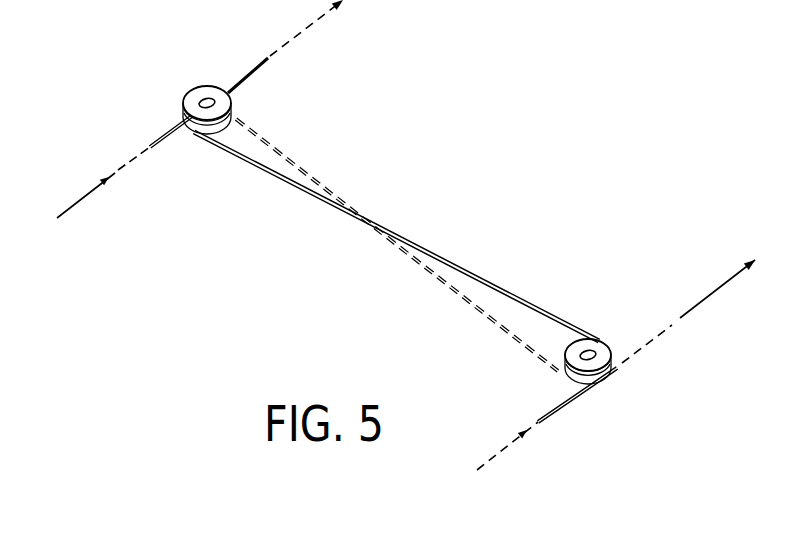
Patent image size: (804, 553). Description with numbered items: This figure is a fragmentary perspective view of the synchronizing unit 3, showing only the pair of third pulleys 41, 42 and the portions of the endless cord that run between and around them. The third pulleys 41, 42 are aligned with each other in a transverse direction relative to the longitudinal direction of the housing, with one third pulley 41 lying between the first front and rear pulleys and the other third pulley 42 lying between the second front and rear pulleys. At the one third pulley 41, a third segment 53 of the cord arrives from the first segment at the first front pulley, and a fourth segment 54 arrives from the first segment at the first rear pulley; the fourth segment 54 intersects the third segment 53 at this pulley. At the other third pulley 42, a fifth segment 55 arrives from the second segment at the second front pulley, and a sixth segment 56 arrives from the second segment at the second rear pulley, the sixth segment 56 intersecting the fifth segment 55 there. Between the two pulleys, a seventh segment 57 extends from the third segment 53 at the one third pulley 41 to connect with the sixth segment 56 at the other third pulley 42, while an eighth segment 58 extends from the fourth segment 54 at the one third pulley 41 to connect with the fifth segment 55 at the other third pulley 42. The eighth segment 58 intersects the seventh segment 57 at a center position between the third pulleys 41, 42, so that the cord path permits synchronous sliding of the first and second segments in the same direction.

The synchronizing unit 3 is at (425, 200).
The third pulley 41 is at (196, 88).
The third pulley 42 is at (599, 347).
The third segment 53 is at (143, 147).
The fourth segment 54 is at (240, 73).
The fifth segment 55 is at (565, 404).
The sixth segment 56 is at (652, 342).
The seventh segment 57 is at (290, 160).
The eighth segment 58 is at (532, 305).